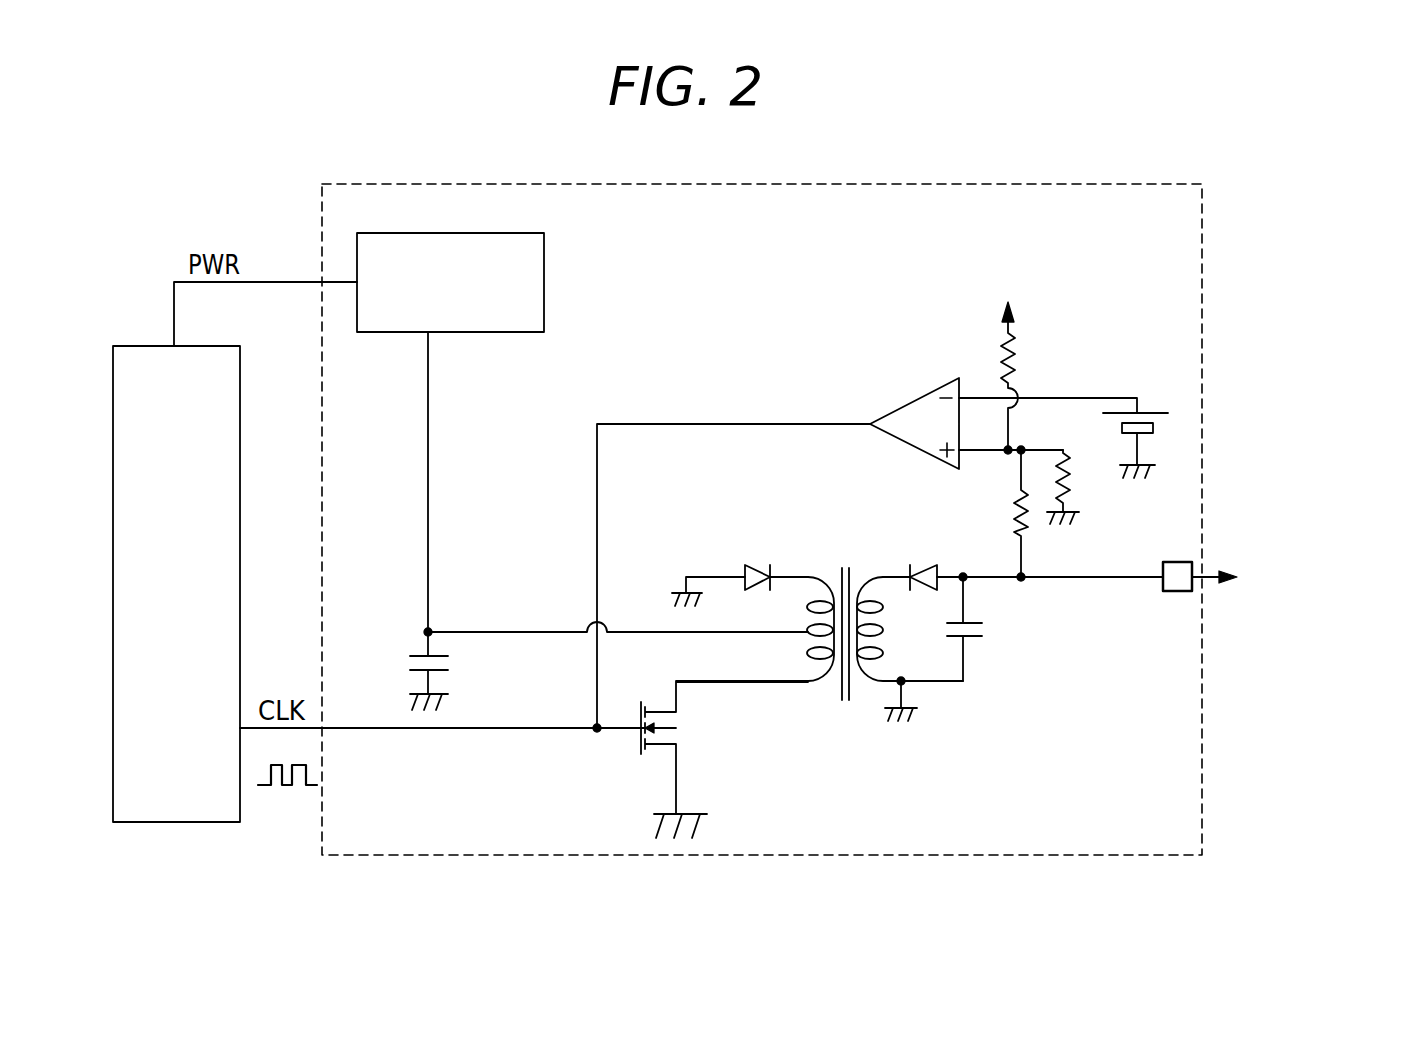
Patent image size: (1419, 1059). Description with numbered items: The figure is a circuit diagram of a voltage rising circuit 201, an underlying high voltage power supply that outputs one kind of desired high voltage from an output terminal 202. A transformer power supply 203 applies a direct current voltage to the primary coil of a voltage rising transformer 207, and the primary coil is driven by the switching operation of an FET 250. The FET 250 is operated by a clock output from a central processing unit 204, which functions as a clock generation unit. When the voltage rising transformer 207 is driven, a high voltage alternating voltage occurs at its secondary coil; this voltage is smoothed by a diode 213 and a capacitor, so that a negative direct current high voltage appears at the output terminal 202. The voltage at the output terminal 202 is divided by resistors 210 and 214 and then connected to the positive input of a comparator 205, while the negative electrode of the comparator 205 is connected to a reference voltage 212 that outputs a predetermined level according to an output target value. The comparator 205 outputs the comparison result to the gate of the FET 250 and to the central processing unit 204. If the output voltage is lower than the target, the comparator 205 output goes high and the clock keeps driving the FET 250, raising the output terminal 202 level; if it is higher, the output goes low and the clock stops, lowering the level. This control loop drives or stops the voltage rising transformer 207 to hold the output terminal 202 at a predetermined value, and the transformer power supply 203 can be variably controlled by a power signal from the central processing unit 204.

The voltage rising circuit 201 is at (420, 190).
The output terminal 202 is at (1177, 588).
The transformer power supply 203 is at (546, 278).
The central processing unit (CPU) 204 is at (158, 353).
The comparator 205 is at (915, 410).
The voltage rising transformer 207 is at (842, 560).
The resistor 210 is at (1012, 513).
The reference voltage 212 is at (1148, 396).
The diode 213 is at (920, 560).
The resistor 214 is at (1020, 354).
The FET 250 is at (686, 732).